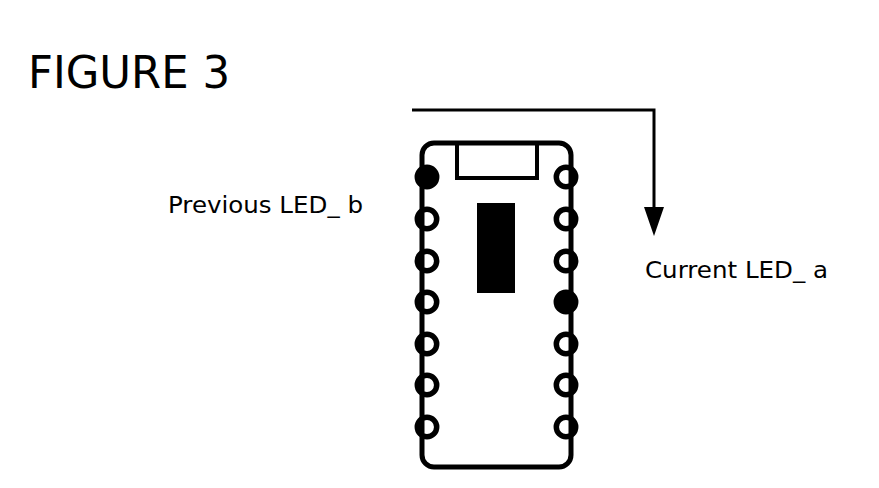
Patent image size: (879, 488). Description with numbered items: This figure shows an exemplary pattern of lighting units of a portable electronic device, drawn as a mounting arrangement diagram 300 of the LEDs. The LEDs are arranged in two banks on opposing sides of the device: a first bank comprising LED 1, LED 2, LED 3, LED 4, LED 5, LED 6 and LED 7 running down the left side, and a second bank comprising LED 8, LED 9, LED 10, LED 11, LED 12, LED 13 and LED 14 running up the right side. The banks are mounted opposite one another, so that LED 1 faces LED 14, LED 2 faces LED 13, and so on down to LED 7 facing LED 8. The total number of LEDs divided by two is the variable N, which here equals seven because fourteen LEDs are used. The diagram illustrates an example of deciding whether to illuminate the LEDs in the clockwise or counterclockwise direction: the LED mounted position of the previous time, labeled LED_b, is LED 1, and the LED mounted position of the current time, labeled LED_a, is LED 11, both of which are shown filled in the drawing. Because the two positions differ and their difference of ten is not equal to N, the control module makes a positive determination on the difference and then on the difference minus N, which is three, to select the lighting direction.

The LED driver / pin configuration diagram 300 is at (533, 245).
The LED 1 is at (412, 179).
The LED 2 is at (412, 221).
The LED 3 is at (412, 263).
The LED 4 is at (412, 304).
The LED 5 is at (412, 346).
The LED 6 is at (412, 387).
The LED 7 is at (412, 429).
The LED 8 is at (578, 429).
The LED 9 is at (578, 387).
The LED 10 is at (584, 346).
The LED 11 is at (584, 304).
The LED 12 is at (584, 263).
The LED 13 is at (584, 221).
The LED 14 is at (584, 179).